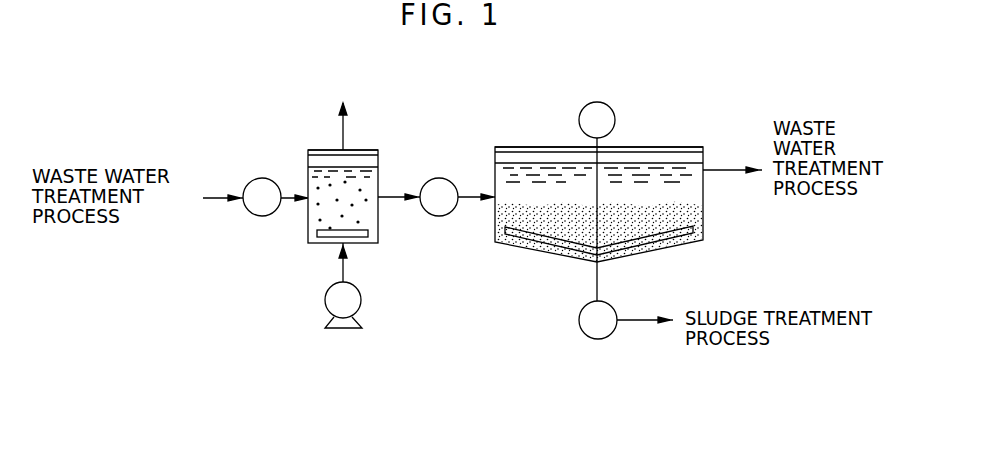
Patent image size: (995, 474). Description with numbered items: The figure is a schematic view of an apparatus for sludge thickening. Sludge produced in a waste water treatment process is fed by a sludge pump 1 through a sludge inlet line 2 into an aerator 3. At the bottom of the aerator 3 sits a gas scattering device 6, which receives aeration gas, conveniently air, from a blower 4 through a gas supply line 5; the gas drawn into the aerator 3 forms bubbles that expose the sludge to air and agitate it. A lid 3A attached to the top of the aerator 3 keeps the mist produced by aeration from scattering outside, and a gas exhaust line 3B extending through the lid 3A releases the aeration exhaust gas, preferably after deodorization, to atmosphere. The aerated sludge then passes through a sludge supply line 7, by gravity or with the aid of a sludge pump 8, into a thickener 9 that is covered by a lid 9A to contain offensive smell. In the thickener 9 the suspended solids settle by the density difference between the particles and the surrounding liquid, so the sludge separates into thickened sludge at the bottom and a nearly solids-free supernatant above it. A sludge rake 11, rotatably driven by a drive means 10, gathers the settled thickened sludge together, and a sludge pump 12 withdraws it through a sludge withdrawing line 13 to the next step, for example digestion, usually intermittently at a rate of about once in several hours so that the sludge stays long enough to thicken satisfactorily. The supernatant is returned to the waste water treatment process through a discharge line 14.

The sludge pump 1 is at (262, 216).
The sludge inlet line 2 is at (290, 222).
The aerator 3 is at (380, 172).
The lid 3A is at (318, 150).
The gas exhaust line 3B is at (347, 125).
The blower 4 is at (361, 300).
The gas supply line 5 is at (343, 270).
The gas scattering device 6 is at (322, 243).
The sludge supply line 7 is at (468, 195).
The sludge pump 8 is at (437, 177).
The thickener 9 is at (495, 218).
The lid 9A is at (520, 148).
The drive means 10 is at (597, 102).
The sludge rake 11 is at (537, 242).
The sludge pump 12 is at (598, 340).
The sludge withdrawing line 13 is at (655, 320).
The discharge line 14 is at (733, 172).